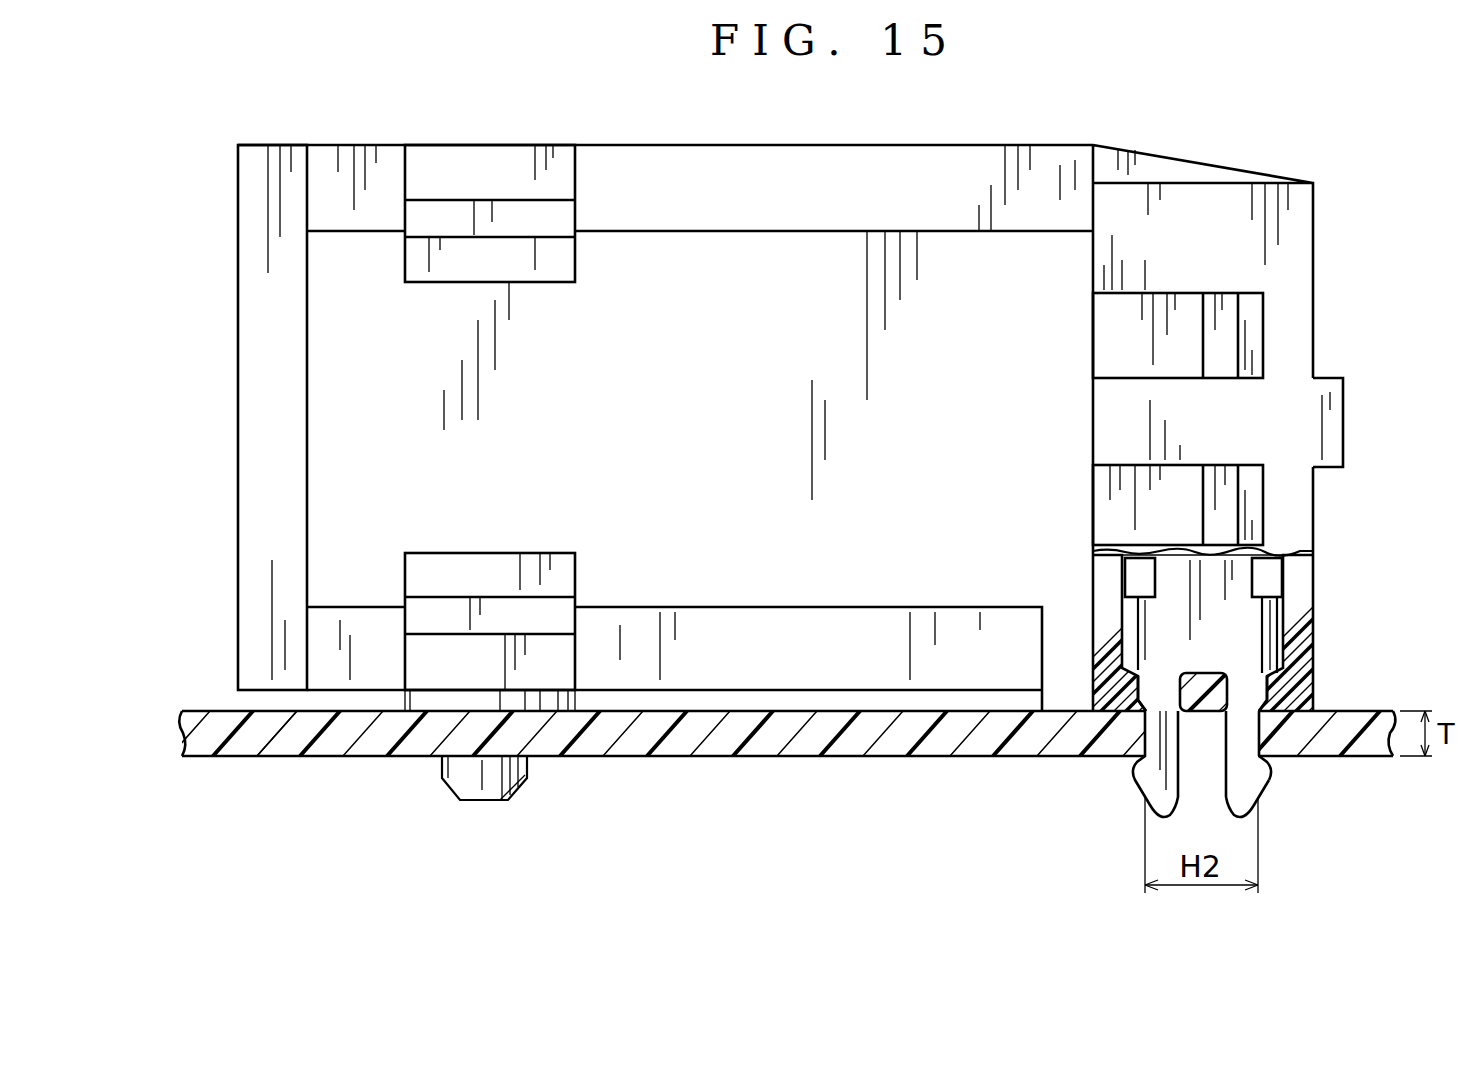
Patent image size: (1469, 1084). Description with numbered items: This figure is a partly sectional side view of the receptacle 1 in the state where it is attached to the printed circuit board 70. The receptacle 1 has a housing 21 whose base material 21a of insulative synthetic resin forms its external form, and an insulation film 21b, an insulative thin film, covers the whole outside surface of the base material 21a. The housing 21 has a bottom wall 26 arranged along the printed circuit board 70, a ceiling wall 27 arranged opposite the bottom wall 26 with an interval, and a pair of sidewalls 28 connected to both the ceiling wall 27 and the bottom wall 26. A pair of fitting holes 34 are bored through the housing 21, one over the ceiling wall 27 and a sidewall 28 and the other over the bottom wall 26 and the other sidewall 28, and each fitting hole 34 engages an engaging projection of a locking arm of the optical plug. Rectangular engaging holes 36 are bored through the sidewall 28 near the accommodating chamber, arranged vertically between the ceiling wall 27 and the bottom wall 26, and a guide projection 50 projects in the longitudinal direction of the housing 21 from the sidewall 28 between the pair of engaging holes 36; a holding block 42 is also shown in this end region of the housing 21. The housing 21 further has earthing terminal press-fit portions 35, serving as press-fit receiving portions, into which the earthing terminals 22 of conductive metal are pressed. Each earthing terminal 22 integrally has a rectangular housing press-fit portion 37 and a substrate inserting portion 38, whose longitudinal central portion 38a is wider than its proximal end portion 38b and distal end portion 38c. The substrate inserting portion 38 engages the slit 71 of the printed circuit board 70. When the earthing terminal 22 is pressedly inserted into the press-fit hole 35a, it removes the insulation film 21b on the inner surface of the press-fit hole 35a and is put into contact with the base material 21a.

The connector 1 is at (937, 128).
The housing 21 is at (806, 145).
The base material 21a is at (1293, 635).
The insulation film 21b is at (1298, 688).
The earthing terminal 22 is at (1141, 581).
The bottom wall 26 is at (747, 755).
The ceiling wall 27 is at (708, 145).
The sidewall 28 is at (636, 250).
The fitting hole 34 is at (513, 205).
The earthing terminal press-fit portion 35 is at (1300, 625).
The press-fit hole 35a is at (1268, 575).
The engaging hole 36 is at (1254, 330).
The housing press-fit portion 37 is at (1140, 627).
The substrate inserting portion 38 is at (1143, 733).
The longitudinal central portion 38a is at (1268, 778).
The proximal end portion 38b is at (1268, 722).
The distal end portion 38c is at (1245, 815).
The terminal holding block 42 is at (1232, 311).
The guide projection 50 is at (1325, 423).
The printed circuit board 70 is at (332, 740).
The slit 71 is at (1198, 748).